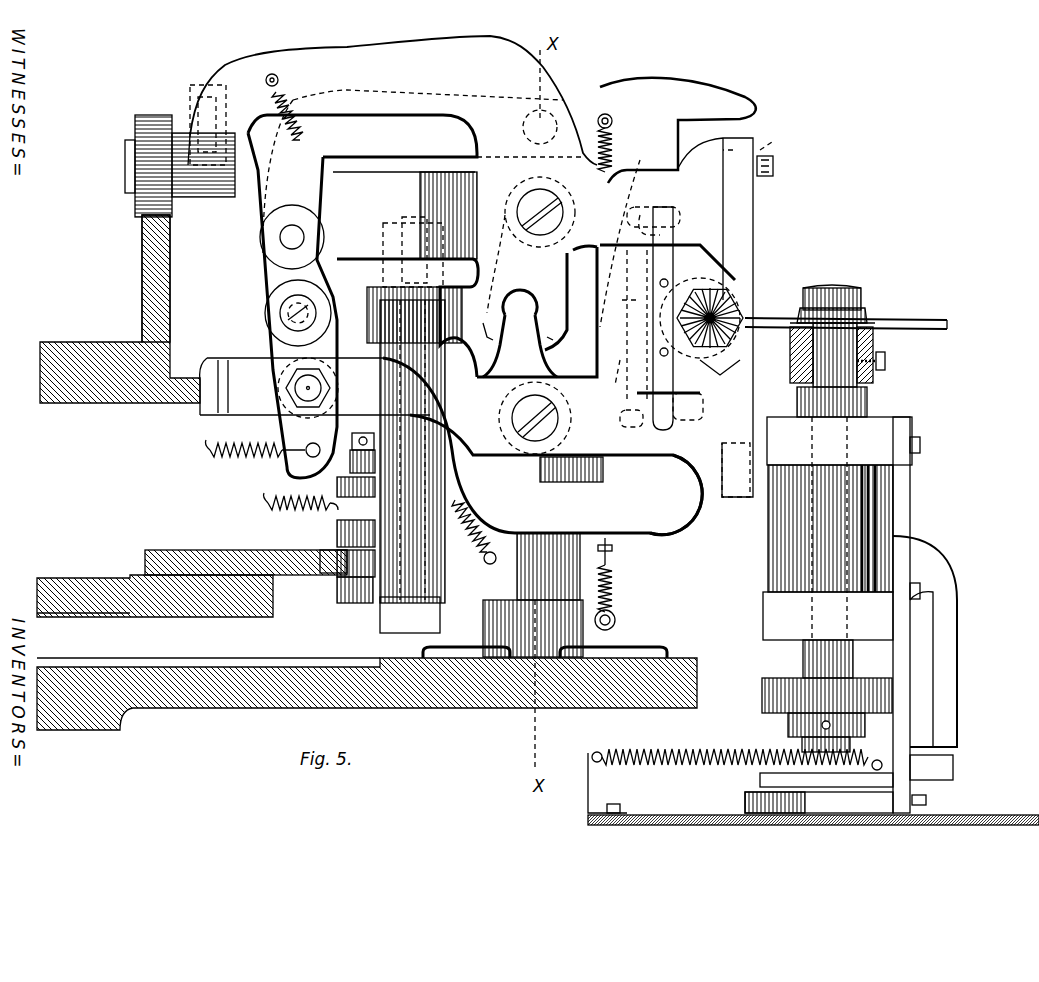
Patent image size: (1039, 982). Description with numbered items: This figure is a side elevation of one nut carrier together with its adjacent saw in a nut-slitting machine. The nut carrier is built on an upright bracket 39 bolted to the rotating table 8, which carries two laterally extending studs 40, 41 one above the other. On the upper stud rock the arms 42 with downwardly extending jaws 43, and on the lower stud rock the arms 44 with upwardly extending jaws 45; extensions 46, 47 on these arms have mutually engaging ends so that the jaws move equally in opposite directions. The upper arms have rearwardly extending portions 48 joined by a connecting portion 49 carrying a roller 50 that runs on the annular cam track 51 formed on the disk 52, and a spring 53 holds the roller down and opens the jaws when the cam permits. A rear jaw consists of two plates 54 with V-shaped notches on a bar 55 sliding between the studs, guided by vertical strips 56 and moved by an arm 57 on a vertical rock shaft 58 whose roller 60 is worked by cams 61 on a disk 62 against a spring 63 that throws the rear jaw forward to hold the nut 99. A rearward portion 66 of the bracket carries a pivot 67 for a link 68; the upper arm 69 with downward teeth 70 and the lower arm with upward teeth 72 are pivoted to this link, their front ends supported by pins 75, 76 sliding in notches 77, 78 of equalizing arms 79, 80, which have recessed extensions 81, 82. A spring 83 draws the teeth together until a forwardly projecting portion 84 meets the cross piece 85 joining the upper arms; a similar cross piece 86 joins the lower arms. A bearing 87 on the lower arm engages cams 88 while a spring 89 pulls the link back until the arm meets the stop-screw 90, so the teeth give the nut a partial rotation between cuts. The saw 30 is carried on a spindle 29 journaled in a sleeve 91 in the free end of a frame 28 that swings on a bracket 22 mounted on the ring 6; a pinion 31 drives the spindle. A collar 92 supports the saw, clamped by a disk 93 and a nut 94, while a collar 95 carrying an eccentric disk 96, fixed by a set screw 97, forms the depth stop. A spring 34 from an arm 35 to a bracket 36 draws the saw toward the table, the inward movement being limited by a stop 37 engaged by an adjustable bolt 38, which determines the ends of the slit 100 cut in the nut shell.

The ring 6 is at (958, 820).
The table 8 is at (458, 705).
The stationary bracket 22 is at (947, 725).
The frame 28 is at (880, 425).
The spindle 29 is at (826, 287).
The saw 30 is at (935, 318).
The pinion 31 is at (762, 697).
The spring 34 is at (686, 745).
The arm 35 is at (900, 707).
The bracket 36 is at (588, 783).
The stop 37 is at (870, 803).
The bolt 38 is at (926, 800).
The bracket 39 is at (620, 545).
The stud 40 is at (530, 205).
The stud 41 is at (663, 528).
The arm 42 is at (653, 200).
The jaw 43 is at (742, 282).
The arm 44 is at (680, 488).
The jaw 45 is at (745, 330).
The extension 46 is at (537, 311).
The extension 47 is at (520, 333).
The rearwardly extending portion 48 is at (392, 146).
The connecting portion 49 is at (210, 197).
The roller 50 is at (153, 113).
The cam track 51 is at (172, 305).
The disk 52 is at (90, 346).
The spring 53 is at (298, 95).
The plate 54 is at (631, 325).
The bar 55 is at (485, 340).
The vertical strip 56 is at (668, 228).
The arm 57 is at (410, 305).
The rock shaft 58 is at (470, 280).
The roller 60 is at (330, 585).
The cam 61 is at (205, 550).
The disk 62 is at (155, 606).
The spring 63 is at (318, 510).
The rearwardly-extending portion 66 is at (362, 305).
The pivot 67 is at (285, 311).
The link 68 is at (290, 350).
The arm 69 is at (415, 136).
The teeth 70 is at (715, 268).
The teeth 72 is at (711, 374).
The pin 75 is at (650, 213).
The pin 76 is at (665, 420).
The notch 77 is at (626, 231).
The notch 78 is at (624, 361).
The arm 79 is at (619, 292).
The arm 80 is at (587, 445).
The extension 81 is at (493, 264).
The extension 82 is at (567, 347).
The spring 83 is at (613, 122).
The forwardly-projecting portion 84 is at (770, 100).
The cross piece 85 is at (765, 145).
The cross piece 86 is at (733, 492).
The bearing 87 is at (205, 420).
The cam 88 is at (200, 397).
The spring 89 is at (215, 462).
The stop-screw 90 is at (781, 173).
The sleeve 91 is at (840, 500).
The collar 92 is at (875, 347).
The disk 93 is at (868, 318).
The nut 94 is at (862, 300).
The collar 95 is at (876, 378).
The disk 96 is at (947, 329).
The set screw 97 is at (886, 362).
The nut 99 is at (690, 300).
The slit 100 is at (681, 406).